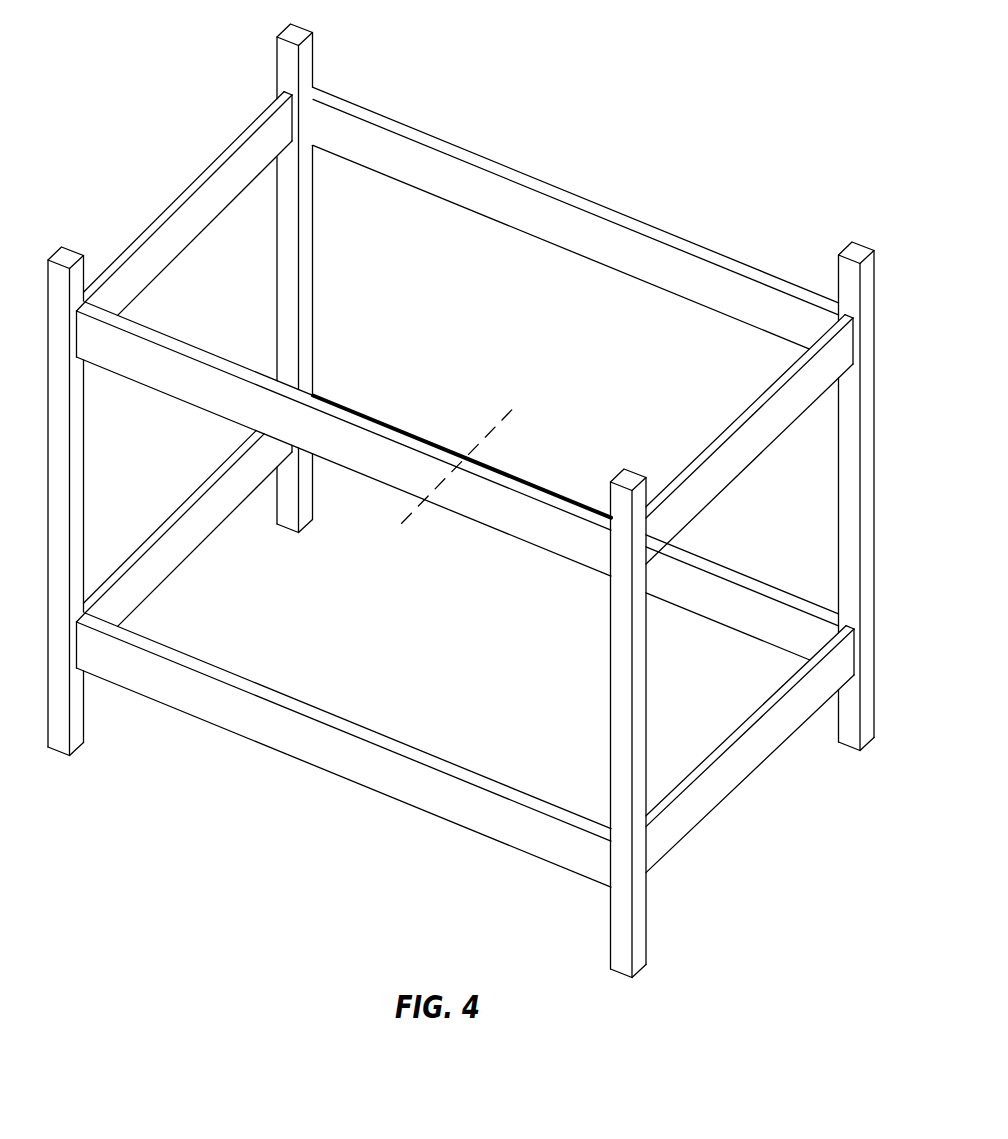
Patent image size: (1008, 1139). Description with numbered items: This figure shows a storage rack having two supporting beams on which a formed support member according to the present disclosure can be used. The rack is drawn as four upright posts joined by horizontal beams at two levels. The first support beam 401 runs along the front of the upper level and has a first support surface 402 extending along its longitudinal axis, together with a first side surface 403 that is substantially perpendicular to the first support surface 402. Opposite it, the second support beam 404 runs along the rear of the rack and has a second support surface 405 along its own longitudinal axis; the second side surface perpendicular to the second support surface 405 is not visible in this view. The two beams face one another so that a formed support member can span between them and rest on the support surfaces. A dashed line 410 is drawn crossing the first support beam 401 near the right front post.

The first support beam 401 is at (379, 410).
The first support surface 402 is at (344, 436).
The first side surface 403 is at (198, 387).
The second support beam 404 is at (461, 501).
The second support surface 405 is at (492, 157).
The section line 410 is at (510, 424).